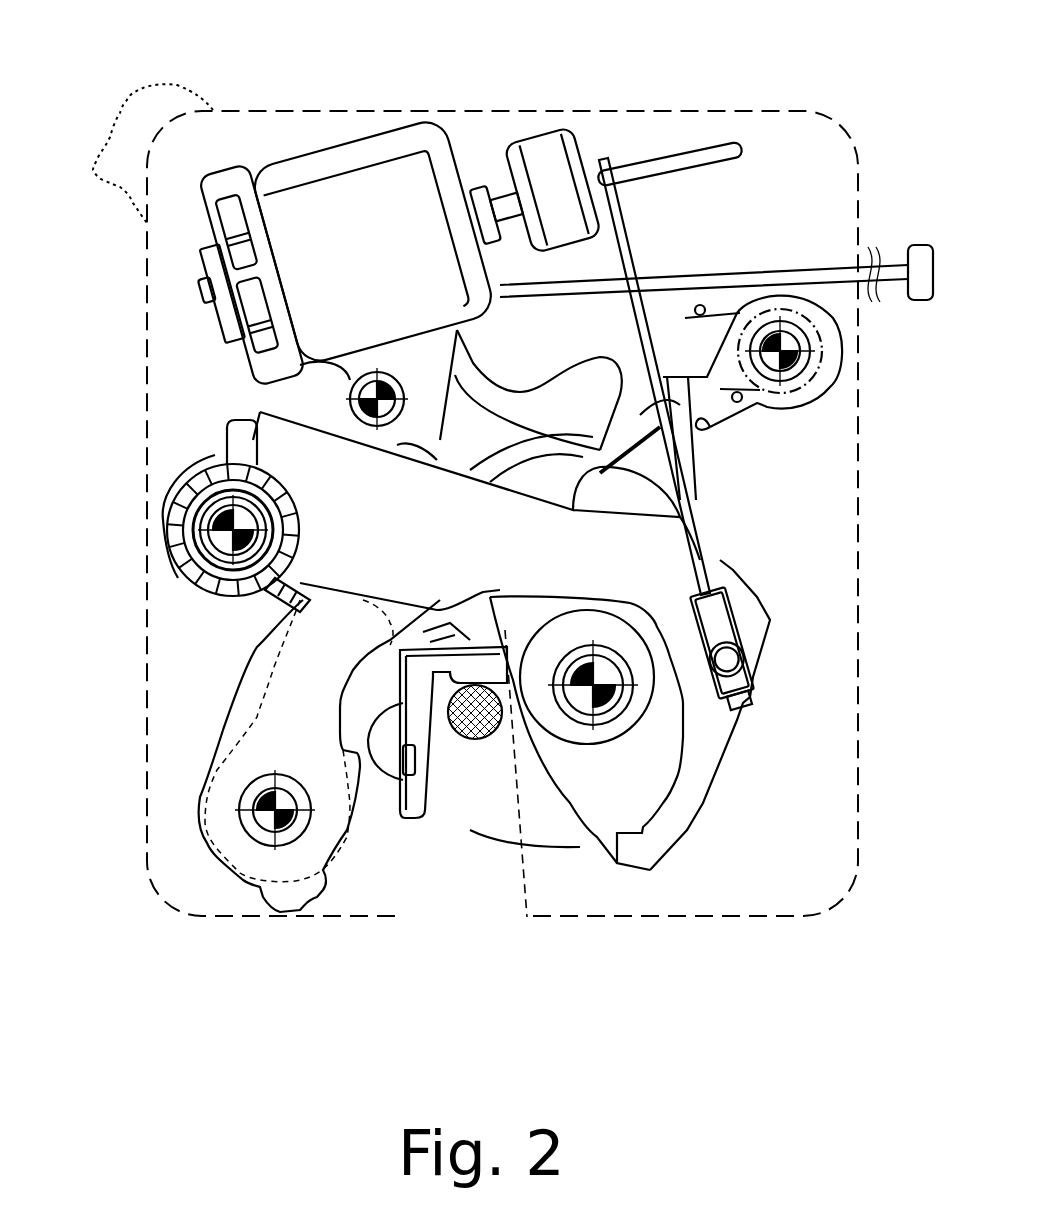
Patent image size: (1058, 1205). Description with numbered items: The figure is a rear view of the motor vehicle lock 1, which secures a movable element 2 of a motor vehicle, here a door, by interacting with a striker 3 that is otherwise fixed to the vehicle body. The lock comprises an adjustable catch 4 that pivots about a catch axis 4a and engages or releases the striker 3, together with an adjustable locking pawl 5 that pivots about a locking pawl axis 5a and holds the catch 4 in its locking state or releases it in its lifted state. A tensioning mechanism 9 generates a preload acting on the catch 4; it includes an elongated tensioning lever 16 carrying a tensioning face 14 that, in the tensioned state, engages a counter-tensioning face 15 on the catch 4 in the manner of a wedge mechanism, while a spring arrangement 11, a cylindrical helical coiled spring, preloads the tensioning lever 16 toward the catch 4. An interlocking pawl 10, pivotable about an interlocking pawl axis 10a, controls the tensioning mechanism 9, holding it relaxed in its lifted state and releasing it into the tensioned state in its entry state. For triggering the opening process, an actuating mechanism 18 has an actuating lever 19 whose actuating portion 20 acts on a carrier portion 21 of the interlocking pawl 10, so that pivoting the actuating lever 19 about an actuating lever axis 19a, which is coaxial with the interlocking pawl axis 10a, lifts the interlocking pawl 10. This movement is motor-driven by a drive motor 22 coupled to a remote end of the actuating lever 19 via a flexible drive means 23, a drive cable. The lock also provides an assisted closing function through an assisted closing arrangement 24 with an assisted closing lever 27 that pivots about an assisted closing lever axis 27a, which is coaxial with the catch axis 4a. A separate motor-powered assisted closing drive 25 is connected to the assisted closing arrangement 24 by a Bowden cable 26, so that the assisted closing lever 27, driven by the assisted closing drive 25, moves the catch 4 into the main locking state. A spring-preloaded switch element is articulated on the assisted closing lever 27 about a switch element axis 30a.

The motor vehicle lock 1 is at (752, 108).
The movable element 2 is at (148, 148).
The striker 3 is at (480, 740).
The catch 4 is at (553, 807).
The catch axis 4a is at (593, 690).
The assisted closing lever axis 27a is at (593, 690).
The locking pawl 5 is at (243, 743).
The locking pawl axis 5a is at (265, 807).
The tensioning mechanism 9 is at (775, 417).
The interlocking pawl 10 is at (200, 512).
The interlocking pawl axis 10a is at (185, 547).
The actuating lever axis 19a is at (185, 547).
The spring arrangement 11 is at (805, 313).
The tensioning face 14 is at (698, 421).
The counter-tensioning face 15 is at (695, 468).
The tensioning lever 16 is at (707, 397).
The actuating mechanism 18 is at (750, 566).
The actuating lever 19 is at (715, 565).
The actuating portion 20 is at (272, 420).
The carrier portion 21 is at (240, 428).
The drive motor 22 is at (333, 215).
The flexible drive means 23 is at (640, 313).
The assisted closing arrangement 24 is at (612, 310).
The assisted closing drive 25 is at (918, 260).
The Bowden cable 26 is at (777, 283).
The assisted closing lever 27 is at (452, 378).
The switch element axis 30a is at (368, 390).